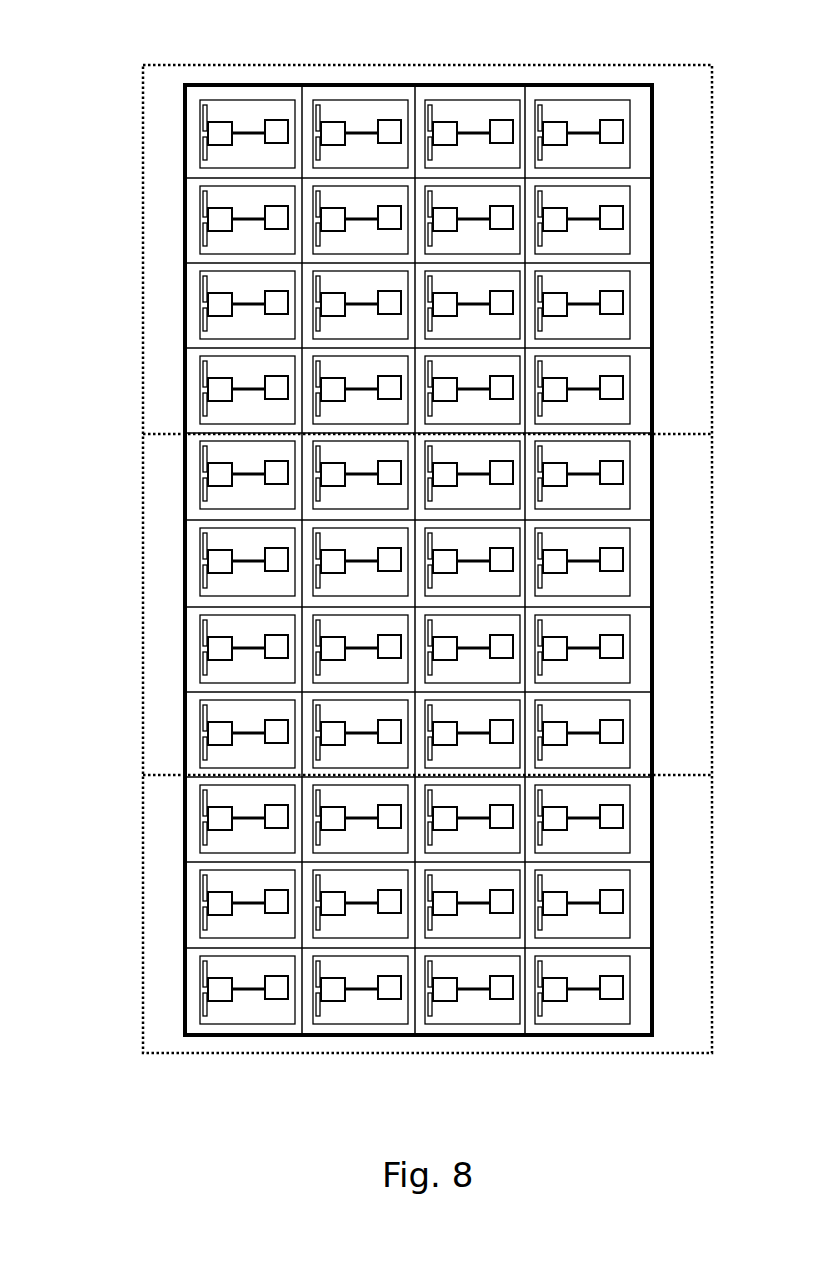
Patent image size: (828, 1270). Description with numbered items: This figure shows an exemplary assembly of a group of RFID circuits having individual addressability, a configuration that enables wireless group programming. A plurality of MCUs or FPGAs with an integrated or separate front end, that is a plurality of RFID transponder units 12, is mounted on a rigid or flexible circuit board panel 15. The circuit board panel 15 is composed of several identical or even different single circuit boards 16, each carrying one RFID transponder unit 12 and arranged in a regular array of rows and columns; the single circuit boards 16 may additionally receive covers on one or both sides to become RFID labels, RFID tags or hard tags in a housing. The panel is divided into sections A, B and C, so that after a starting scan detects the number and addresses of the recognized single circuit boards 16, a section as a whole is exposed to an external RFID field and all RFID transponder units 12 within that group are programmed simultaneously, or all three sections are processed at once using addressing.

The RFID transponder unit 12 is at (243, 115).
The circuit board panel 15 is at (152, 240).
The single circuit board 16 is at (193, 132).